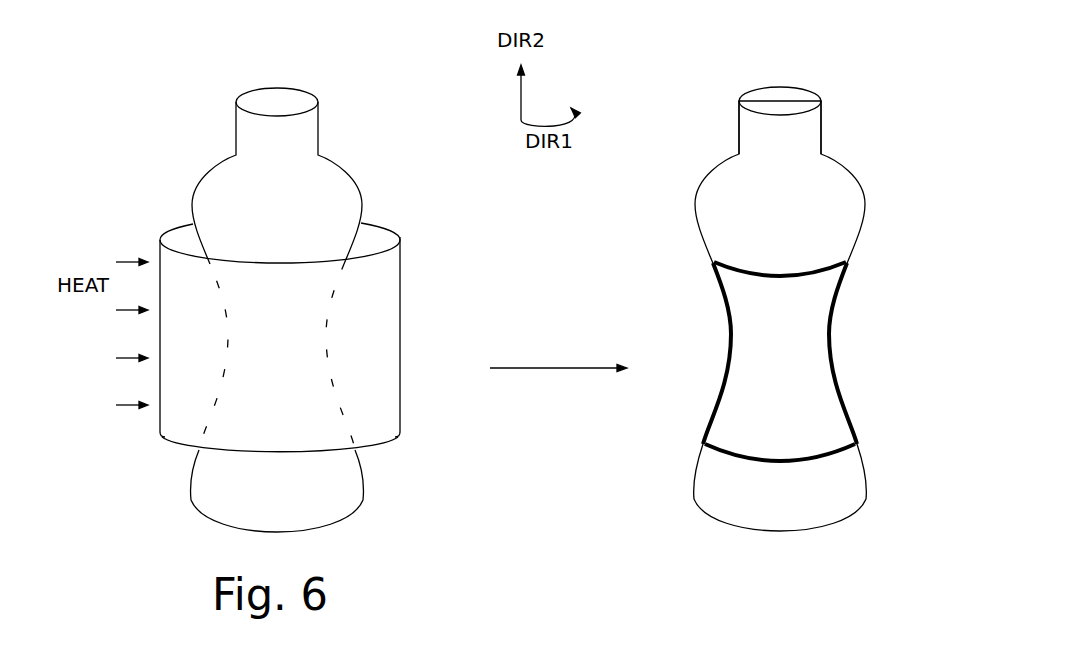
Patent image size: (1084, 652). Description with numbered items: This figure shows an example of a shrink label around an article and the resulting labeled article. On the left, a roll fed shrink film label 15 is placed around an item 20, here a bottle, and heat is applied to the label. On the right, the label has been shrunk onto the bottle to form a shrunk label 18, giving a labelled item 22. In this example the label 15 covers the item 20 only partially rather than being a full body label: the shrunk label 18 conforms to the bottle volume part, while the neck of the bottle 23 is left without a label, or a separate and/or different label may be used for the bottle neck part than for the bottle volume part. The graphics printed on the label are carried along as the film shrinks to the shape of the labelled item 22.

The roll fed shrink film label 15 is at (159, 433).
The item 20 is at (320, 185).
The labelled item 22 is at (782, 280).
The neck of a bottle 23 is at (822, 128).
The shrunk label 18 is at (720, 433).